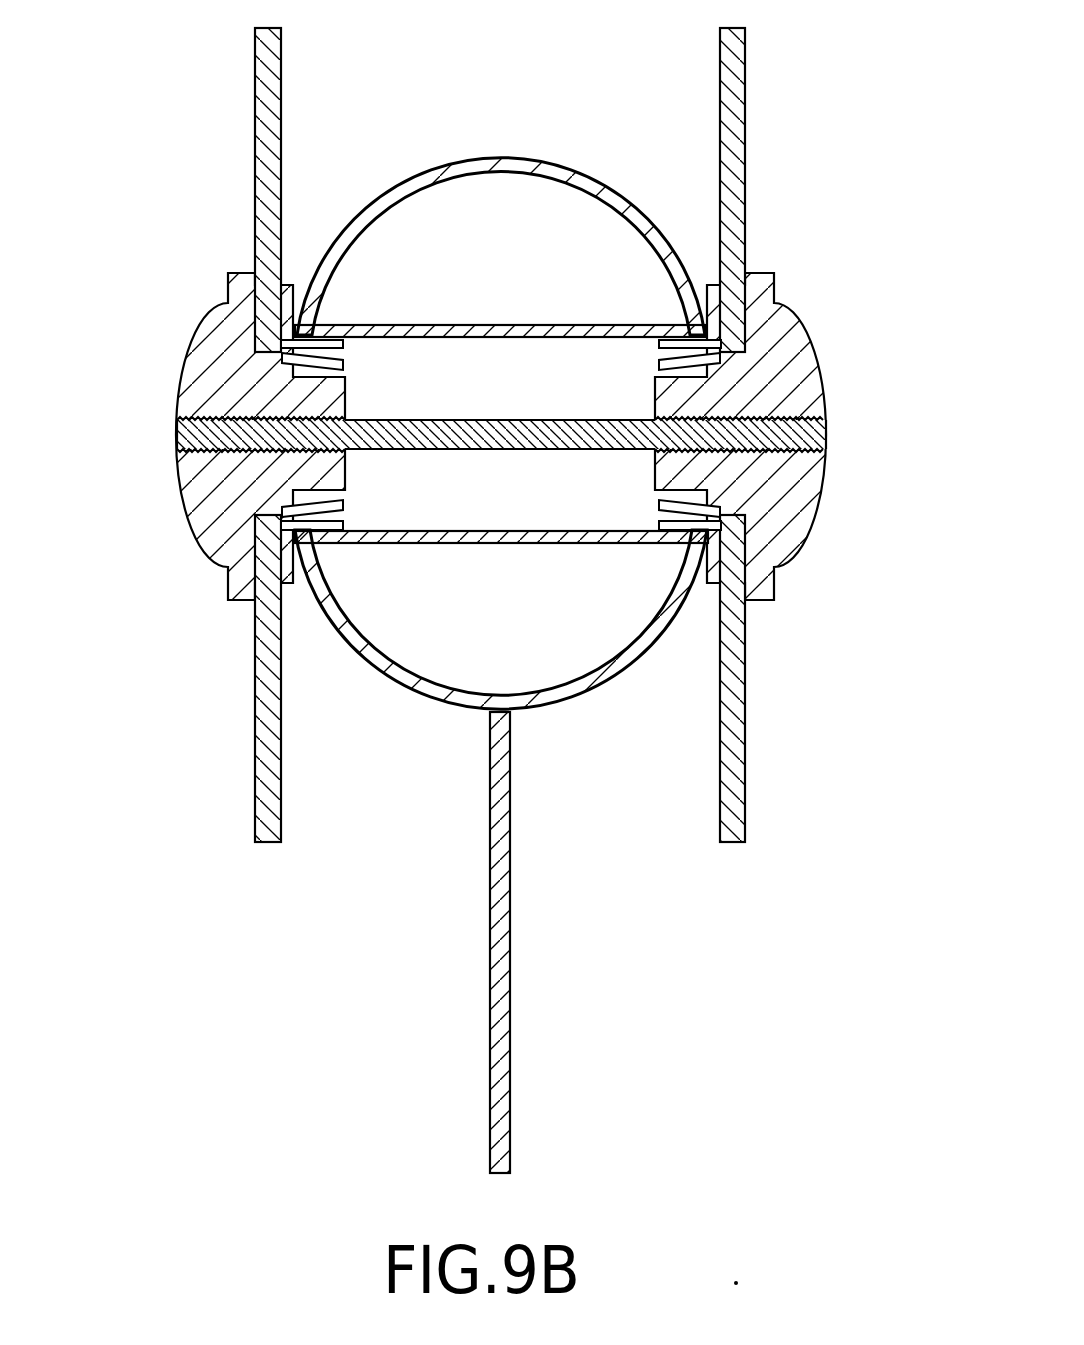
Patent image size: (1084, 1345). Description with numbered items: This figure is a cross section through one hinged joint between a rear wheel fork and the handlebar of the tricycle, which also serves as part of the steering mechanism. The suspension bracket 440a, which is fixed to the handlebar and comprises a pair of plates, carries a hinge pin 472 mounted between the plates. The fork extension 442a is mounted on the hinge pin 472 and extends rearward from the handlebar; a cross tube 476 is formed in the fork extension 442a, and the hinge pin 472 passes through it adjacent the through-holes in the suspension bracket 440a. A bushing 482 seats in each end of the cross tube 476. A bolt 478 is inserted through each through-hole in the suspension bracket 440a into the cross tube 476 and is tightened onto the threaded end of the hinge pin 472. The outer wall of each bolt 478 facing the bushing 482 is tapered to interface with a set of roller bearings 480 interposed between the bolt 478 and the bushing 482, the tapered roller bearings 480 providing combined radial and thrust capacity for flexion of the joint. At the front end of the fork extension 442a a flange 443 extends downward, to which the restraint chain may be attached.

The suspension bracket 440a is at (268, 82).
The fork extension 442a is at (538, 165).
The flange 443 is at (505, 832).
The hinge pin 472 is at (182, 437).
The cross tube 476 is at (459, 328).
The bolt 478 is at (216, 325).
The roller bearing 480 is at (315, 366).
The bushing 482 is at (330, 343).